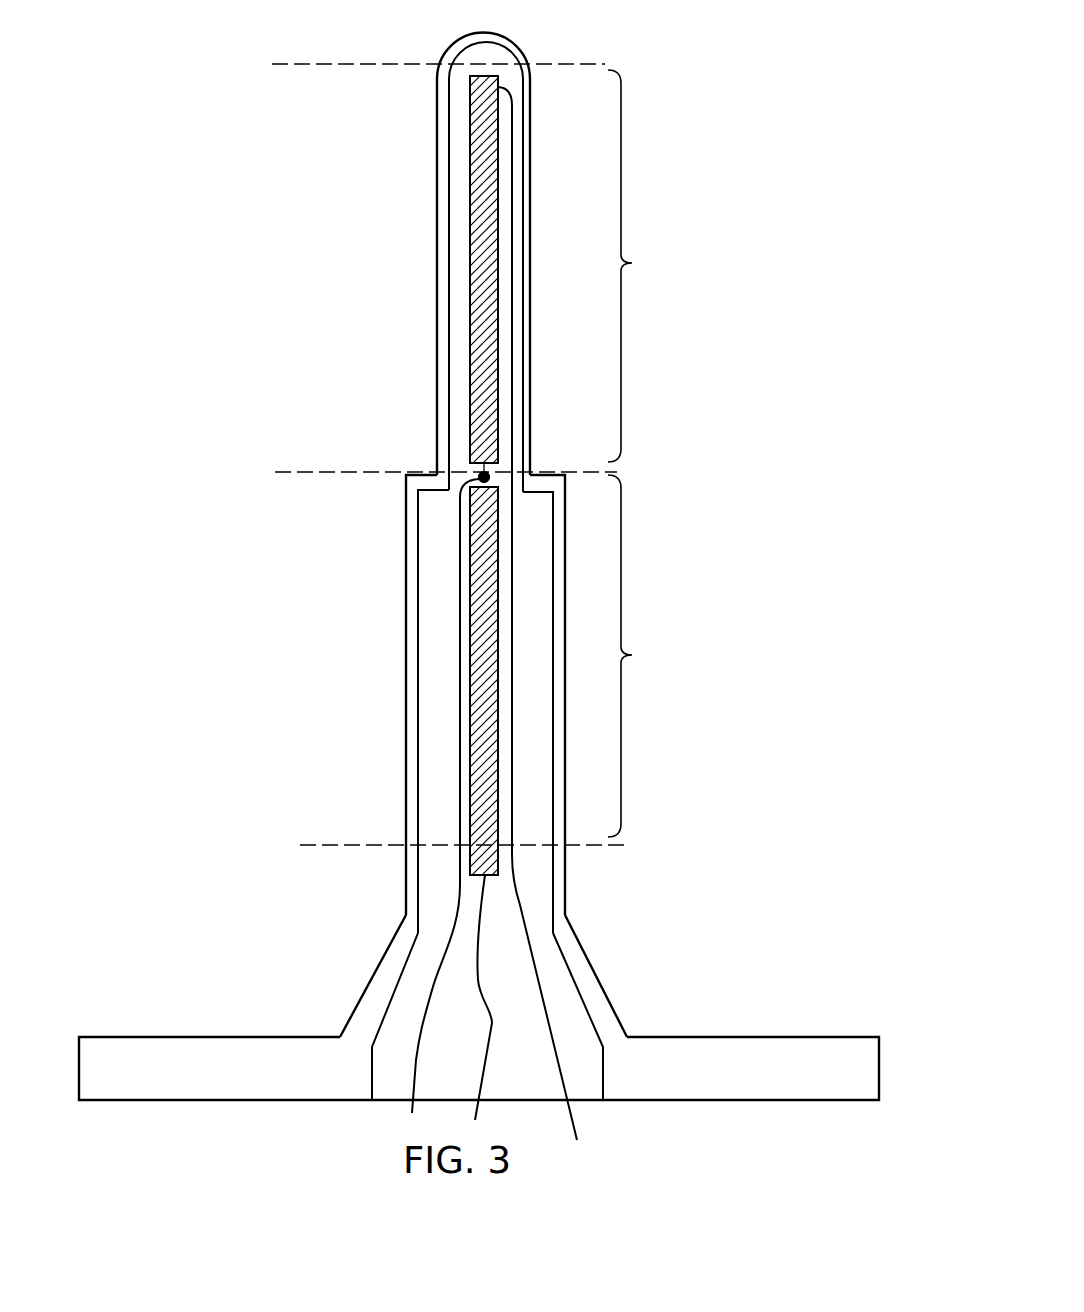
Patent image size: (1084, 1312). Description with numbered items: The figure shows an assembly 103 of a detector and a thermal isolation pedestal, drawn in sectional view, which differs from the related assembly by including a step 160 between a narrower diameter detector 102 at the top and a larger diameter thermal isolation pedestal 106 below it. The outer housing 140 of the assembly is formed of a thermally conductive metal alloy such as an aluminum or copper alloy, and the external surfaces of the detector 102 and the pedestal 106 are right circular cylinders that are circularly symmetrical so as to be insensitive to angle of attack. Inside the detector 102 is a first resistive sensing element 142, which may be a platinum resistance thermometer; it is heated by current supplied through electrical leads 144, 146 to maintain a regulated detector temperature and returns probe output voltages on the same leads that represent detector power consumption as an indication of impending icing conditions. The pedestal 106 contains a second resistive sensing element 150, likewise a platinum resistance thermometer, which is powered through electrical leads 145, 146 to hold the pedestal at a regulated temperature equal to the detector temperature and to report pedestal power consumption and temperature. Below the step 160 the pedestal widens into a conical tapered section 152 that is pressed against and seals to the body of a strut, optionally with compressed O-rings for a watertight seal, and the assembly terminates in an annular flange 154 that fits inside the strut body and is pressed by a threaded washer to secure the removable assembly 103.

The assembly 103 is at (228, 177).
The detector 102 is at (632, 263).
The thermal isolation pedestal 106 is at (632, 655).
The outer housing 140 is at (437, 275).
The first resistive sensing element 142 is at (470, 97).
The electrical lead 144 is at (512, 160).
The electrical lead 145 is at (492, 1023).
The electrical lead 146 is at (460, 525).
The second resistive sensing element 150 is at (470, 643).
The conical tapered section 152 is at (593, 967).
The annular flange 154 is at (717, 1037).
The step 160 is at (418, 472).